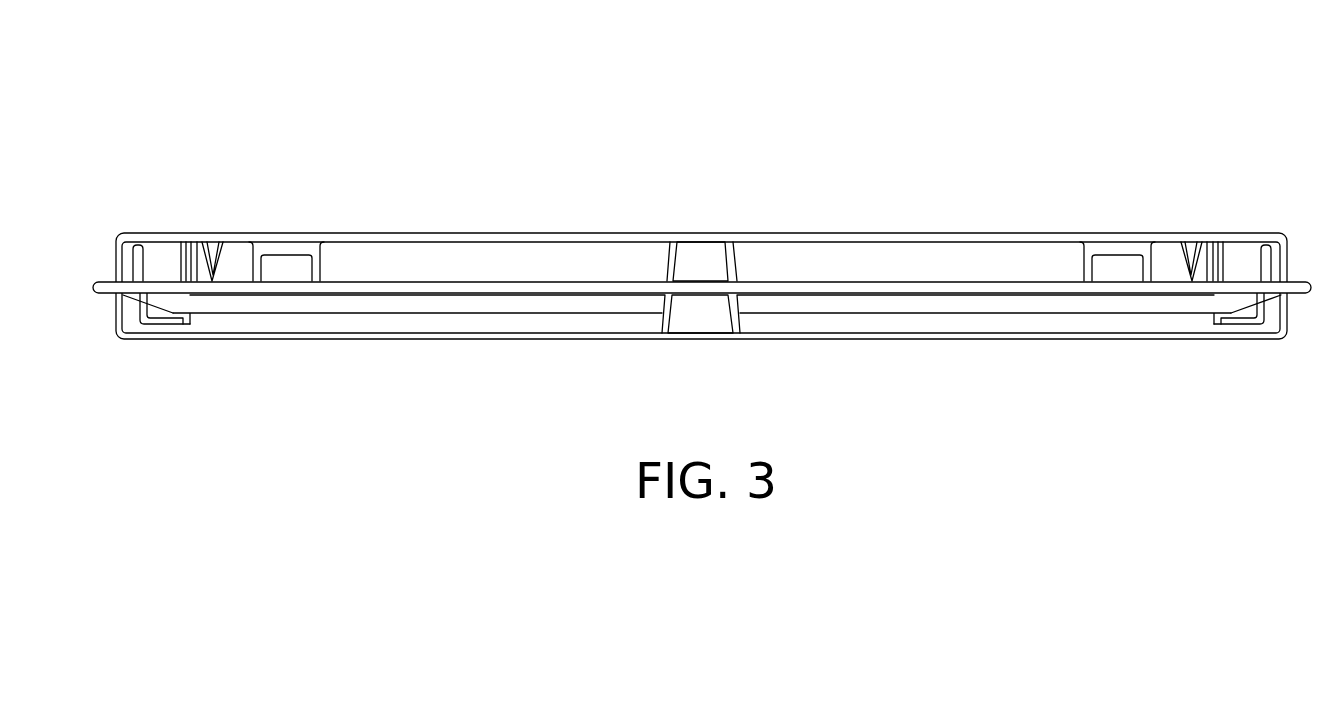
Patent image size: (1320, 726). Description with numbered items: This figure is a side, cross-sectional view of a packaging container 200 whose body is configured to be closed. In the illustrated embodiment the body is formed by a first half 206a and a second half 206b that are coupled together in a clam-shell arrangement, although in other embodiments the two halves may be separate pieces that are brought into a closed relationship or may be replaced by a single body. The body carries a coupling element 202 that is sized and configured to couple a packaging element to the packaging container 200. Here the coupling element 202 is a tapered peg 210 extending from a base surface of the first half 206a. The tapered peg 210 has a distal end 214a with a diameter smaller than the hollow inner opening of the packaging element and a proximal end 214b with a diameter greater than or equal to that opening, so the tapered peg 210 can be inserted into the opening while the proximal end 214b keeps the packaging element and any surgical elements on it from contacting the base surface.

The packaging container 200 is at (702, 226).
The coupling element 202 is at (665, 267).
The first half 206a is at (378, 340).
The second half 206b is at (355, 233).
The tapered peg 210 is at (708, 256).
The distal end 214a is at (734, 222).
The proximal end 214b is at (704, 352).